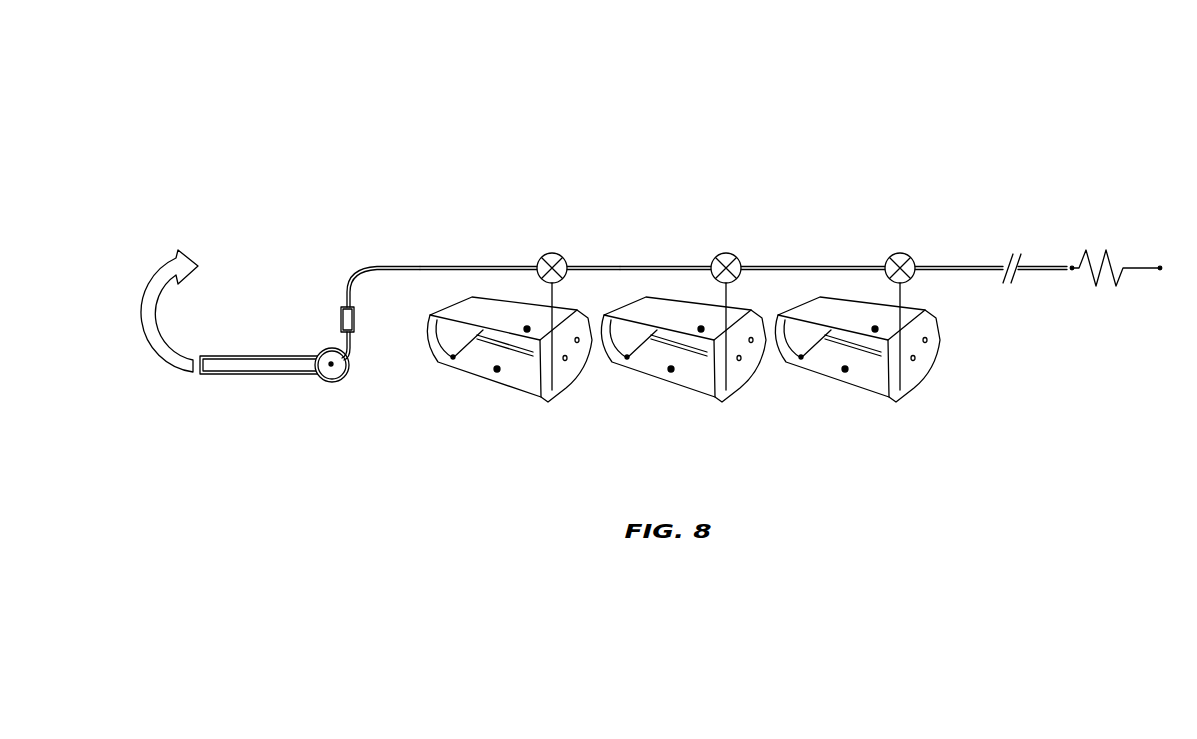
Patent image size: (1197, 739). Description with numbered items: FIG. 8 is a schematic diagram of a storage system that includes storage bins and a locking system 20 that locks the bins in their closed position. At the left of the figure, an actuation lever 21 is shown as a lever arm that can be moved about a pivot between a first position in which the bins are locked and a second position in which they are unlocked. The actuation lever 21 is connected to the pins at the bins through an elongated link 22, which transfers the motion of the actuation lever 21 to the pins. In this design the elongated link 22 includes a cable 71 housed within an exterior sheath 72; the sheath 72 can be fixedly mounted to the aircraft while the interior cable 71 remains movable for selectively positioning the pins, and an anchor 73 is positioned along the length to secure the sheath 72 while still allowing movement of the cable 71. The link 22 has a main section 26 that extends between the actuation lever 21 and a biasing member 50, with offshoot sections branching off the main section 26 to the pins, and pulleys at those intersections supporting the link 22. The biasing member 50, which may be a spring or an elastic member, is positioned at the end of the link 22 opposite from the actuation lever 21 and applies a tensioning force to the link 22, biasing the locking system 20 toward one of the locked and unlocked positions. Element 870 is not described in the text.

The locking system 20 is at (481, 110).
The actuation lever 21 is at (225, 377).
The elongated link 22 is at (630, 265).
The main section 26 is at (478, 265).
The biasing member 50 is at (1107, 252).
The cable 71 is at (352, 347).
The sheath 72 is at (372, 263).
The anchor 73 is at (341, 311).
The reel 870 is at (328, 379).